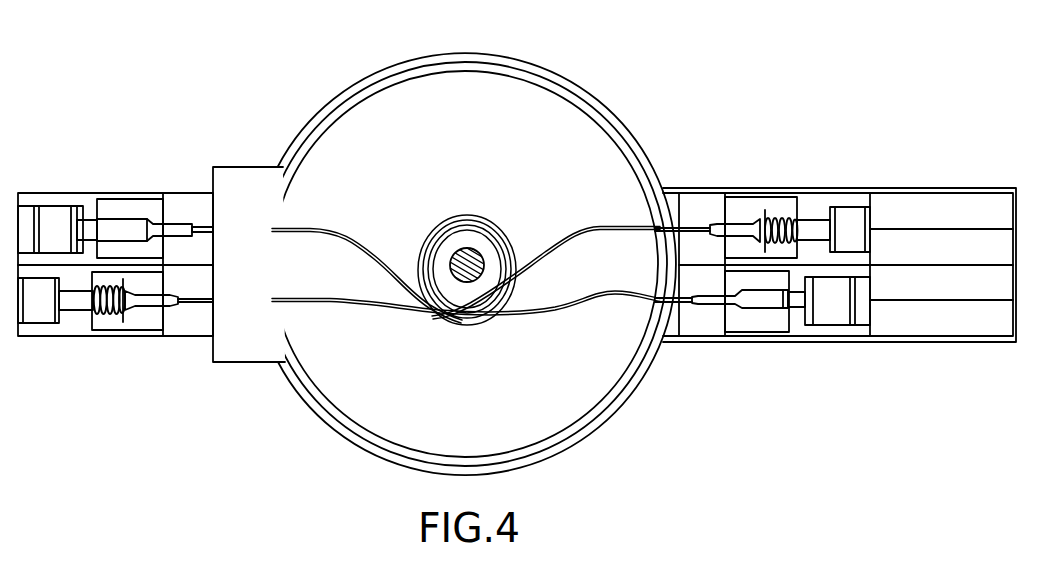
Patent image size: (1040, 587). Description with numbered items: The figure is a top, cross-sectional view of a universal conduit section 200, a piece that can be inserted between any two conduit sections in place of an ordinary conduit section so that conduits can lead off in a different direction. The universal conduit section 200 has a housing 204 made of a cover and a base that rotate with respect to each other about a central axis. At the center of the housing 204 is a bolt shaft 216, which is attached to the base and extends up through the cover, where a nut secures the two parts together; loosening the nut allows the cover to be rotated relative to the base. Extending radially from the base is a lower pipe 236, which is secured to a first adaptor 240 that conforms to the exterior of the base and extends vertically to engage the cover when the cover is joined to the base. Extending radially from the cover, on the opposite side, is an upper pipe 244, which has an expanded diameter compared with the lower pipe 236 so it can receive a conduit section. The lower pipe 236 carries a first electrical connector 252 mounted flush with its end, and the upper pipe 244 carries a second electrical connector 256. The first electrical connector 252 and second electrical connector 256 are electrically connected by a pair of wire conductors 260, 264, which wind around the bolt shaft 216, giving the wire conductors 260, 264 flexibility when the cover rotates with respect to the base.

The universal conduit section 200 is at (517, 264).
The housing 204 is at (590, 90).
The bolt shaft 216 is at (467, 252).
The lower pipe 236 is at (68, 193).
The first adaptor 240 is at (235, 167).
The upper pipe 244 is at (835, 249).
The first electrical connector 252 is at (163, 315).
The second electrical connector 256 is at (872, 215).
The wire conductor 260 is at (357, 240).
The wire conductor 264 is at (313, 306).